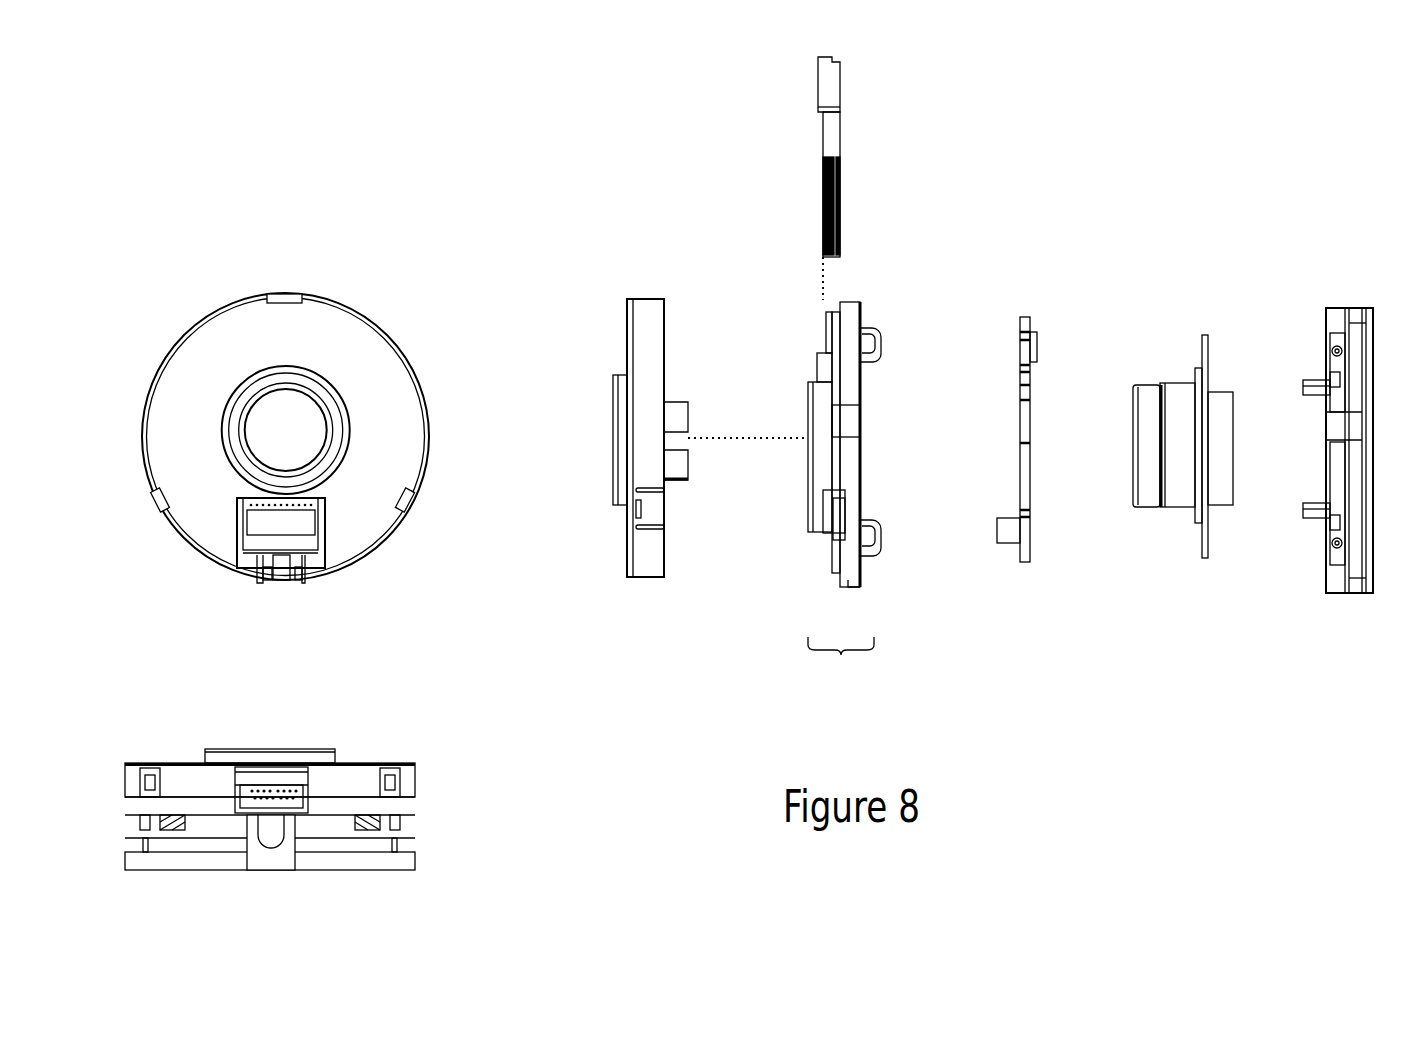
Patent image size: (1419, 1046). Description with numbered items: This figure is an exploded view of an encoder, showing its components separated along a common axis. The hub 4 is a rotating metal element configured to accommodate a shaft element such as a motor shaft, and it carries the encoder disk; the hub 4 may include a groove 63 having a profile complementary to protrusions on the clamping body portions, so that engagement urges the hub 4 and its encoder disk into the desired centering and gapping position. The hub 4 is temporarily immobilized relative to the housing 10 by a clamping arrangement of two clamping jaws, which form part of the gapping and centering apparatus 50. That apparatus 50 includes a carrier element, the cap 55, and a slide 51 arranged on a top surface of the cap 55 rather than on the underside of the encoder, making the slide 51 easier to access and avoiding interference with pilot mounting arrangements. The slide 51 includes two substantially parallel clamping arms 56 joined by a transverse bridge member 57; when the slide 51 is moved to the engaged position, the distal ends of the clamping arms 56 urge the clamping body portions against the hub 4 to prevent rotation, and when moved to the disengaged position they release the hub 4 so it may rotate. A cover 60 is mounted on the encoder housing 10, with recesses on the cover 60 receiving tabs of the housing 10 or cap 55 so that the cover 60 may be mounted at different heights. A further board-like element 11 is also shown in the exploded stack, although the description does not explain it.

The hub 4 is at (1225, 395).
The housing 10 is at (1370, 318).
The circuit board 11 is at (1030, 322).
The gapping and centering apparatus 50 is at (410, 806).
The slide 51 is at (864, 64).
The cap 55 is at (860, 312).
The clamping arms 56 is at (840, 201).
The transverse bridge member 57 is at (832, 94).
The cover 60 is at (378, 320).
The groove 63 is at (1160, 385).